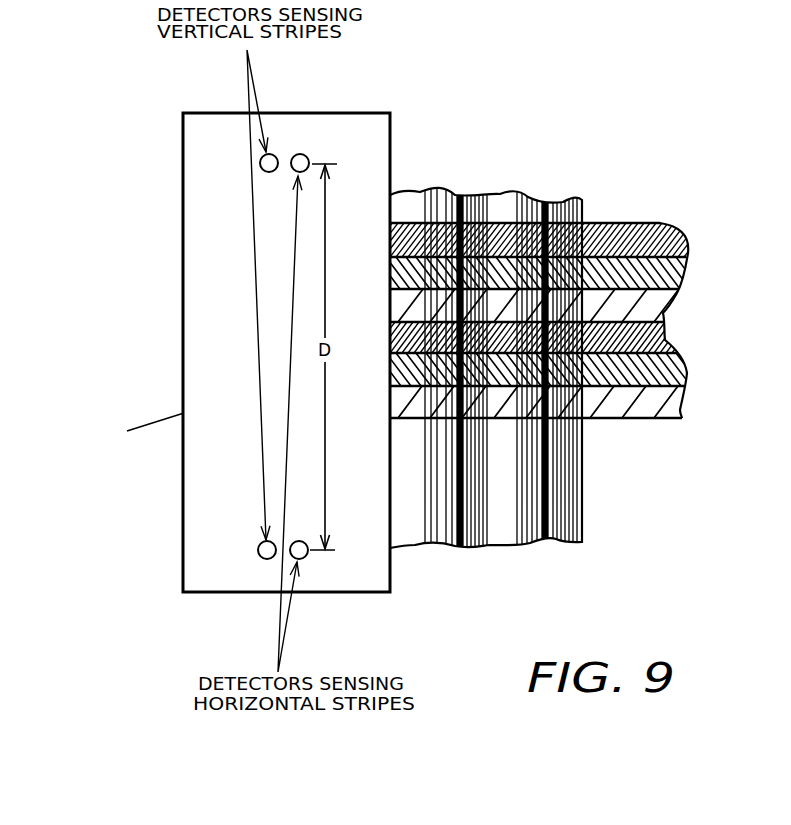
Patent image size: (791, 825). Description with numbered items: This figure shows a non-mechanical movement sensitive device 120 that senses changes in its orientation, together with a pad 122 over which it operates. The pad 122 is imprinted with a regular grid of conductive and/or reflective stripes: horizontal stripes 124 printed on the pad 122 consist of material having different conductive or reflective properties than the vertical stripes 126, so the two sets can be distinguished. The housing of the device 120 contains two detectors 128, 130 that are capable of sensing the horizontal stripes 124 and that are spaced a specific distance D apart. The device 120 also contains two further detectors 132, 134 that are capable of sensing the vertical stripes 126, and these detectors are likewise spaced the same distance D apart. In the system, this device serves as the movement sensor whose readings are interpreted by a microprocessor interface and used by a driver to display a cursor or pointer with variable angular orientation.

The non-mechanical movement sensitive device 120 is at (378, 173).
The pad 122 is at (545, 188).
The horizontal stripes 124 is at (657, 337).
The vertical stripes 126 is at (502, 527).
The detector 128 is at (304, 156).
The detector 130 is at (305, 559).
The detector 132 is at (273, 155).
The detector 134 is at (267, 560).